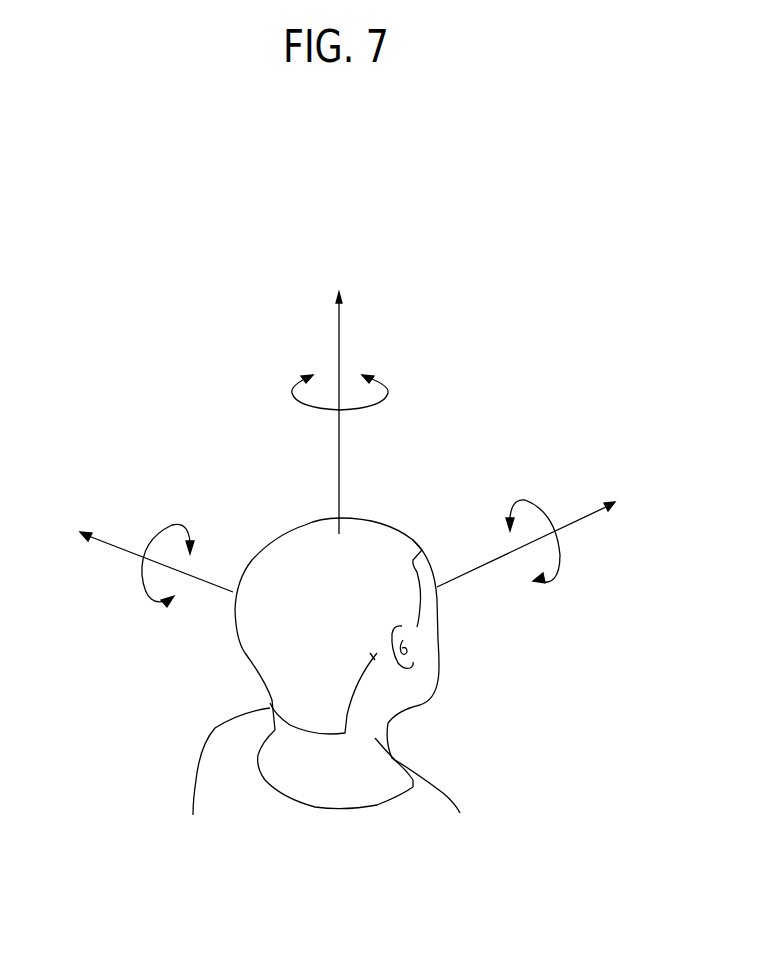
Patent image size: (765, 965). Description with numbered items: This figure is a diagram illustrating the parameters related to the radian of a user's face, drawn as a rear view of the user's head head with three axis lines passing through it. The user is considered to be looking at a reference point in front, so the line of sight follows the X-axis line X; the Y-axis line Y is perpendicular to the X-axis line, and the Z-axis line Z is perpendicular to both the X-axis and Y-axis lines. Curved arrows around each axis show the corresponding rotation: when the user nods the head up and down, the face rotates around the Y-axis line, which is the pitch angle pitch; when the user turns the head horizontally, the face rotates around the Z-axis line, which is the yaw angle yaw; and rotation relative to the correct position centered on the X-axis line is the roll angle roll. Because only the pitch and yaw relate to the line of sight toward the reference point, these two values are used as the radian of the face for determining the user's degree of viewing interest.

The X-axis line X is at (536, 539).
The Y-axis line Y is at (145, 557).
The Z-axis line Z is at (339, 402).
The yaw angle yaw is at (357, 392).
The pitch angle pitch is at (147, 575).
The roll angle roll is at (546, 550).
The user's head is at (326, 666).